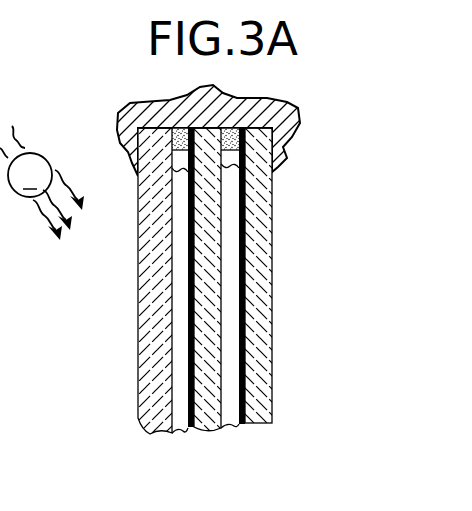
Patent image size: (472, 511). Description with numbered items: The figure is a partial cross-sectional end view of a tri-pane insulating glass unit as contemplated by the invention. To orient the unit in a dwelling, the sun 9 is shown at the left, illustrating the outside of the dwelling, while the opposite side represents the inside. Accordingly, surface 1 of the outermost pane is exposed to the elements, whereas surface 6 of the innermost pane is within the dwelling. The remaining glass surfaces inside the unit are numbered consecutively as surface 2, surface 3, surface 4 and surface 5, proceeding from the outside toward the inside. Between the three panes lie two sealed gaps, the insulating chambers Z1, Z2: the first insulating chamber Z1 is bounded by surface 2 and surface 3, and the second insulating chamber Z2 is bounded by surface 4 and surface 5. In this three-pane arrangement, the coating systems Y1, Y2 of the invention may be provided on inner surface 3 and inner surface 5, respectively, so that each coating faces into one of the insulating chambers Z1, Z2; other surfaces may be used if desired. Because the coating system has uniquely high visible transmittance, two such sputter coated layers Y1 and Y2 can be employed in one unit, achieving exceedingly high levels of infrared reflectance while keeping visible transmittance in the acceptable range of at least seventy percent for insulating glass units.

The surface 1 is at (138, 380).
The surface 2 is at (183, 430).
The inner surface 3 is at (198, 428).
The surface 4 is at (223, 423).
The inner surface 5 is at (247, 414).
The surface 6 is at (272, 382).
The sun 9 is at (42, 183).
The insulating chamber Z1 is at (180, 277).
The insulating chamber Z2 is at (230, 285).
The coating system Y1 is at (193, 343).
The coating system Y2 is at (242, 363).